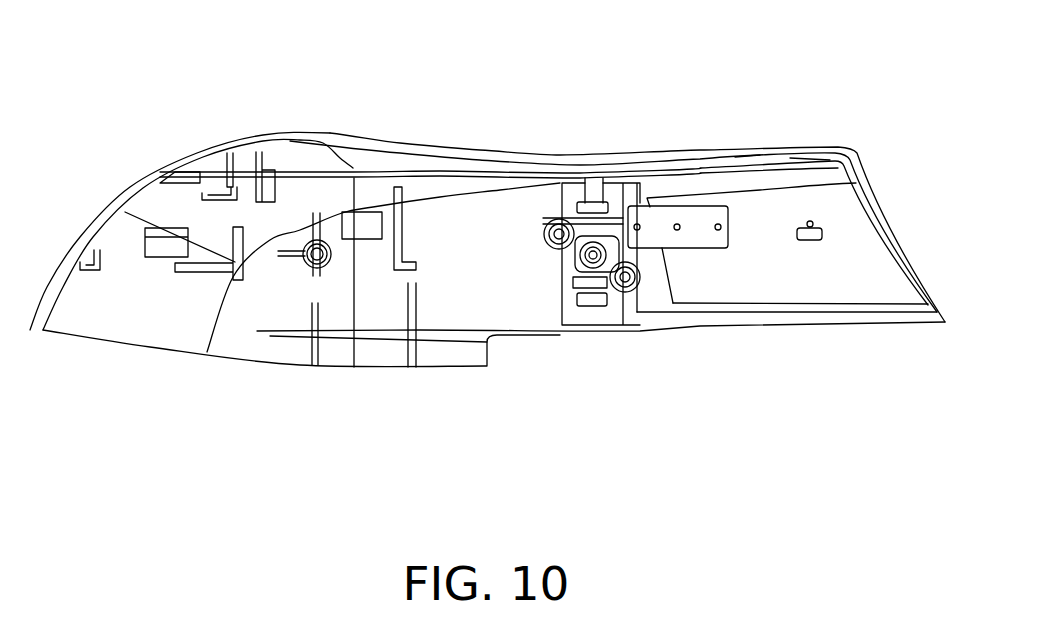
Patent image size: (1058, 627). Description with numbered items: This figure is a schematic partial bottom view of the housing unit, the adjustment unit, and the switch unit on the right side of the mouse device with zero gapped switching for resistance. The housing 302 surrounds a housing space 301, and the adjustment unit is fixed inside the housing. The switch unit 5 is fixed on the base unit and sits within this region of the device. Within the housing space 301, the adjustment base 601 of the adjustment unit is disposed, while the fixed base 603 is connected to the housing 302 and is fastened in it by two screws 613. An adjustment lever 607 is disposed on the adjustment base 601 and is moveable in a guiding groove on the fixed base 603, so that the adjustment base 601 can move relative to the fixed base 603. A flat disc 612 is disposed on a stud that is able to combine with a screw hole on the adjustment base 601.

The housing space 301 is at (247, 333).
The housing 302 is at (400, 147).
The switch unit 5 is at (692, 237).
The adjustment base 601 is at (593, 275).
The fixed base 603 is at (566, 272).
The adjustment lever 607 is at (596, 181).
The flat disc 612 is at (618, 290).
The screws 613 is at (551, 246).